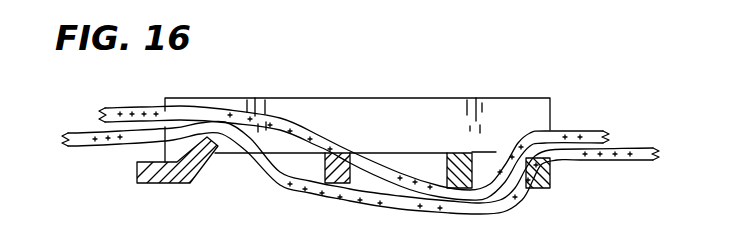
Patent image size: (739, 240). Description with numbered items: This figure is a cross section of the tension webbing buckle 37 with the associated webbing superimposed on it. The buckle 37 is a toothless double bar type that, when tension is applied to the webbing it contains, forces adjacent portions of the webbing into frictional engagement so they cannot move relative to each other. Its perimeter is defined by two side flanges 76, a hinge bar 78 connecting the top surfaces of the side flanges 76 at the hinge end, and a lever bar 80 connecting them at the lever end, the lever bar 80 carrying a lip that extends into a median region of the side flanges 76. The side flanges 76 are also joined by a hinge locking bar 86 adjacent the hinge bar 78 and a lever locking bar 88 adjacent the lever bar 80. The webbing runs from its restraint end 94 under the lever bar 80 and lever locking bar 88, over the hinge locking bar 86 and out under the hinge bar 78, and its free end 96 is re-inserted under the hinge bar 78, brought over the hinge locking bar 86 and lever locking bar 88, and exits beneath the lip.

The tension webbing buckle 37 is at (193, 88).
The side flanges 76 is at (418, 105).
The hinge bar 78 is at (552, 173).
The lever bar 80 is at (152, 183).
The hinge locking bar 86 is at (453, 175).
The lever locking bar 88 is at (325, 178).
The restraint end 94 is at (130, 108).
The free end 96 is at (100, 147).